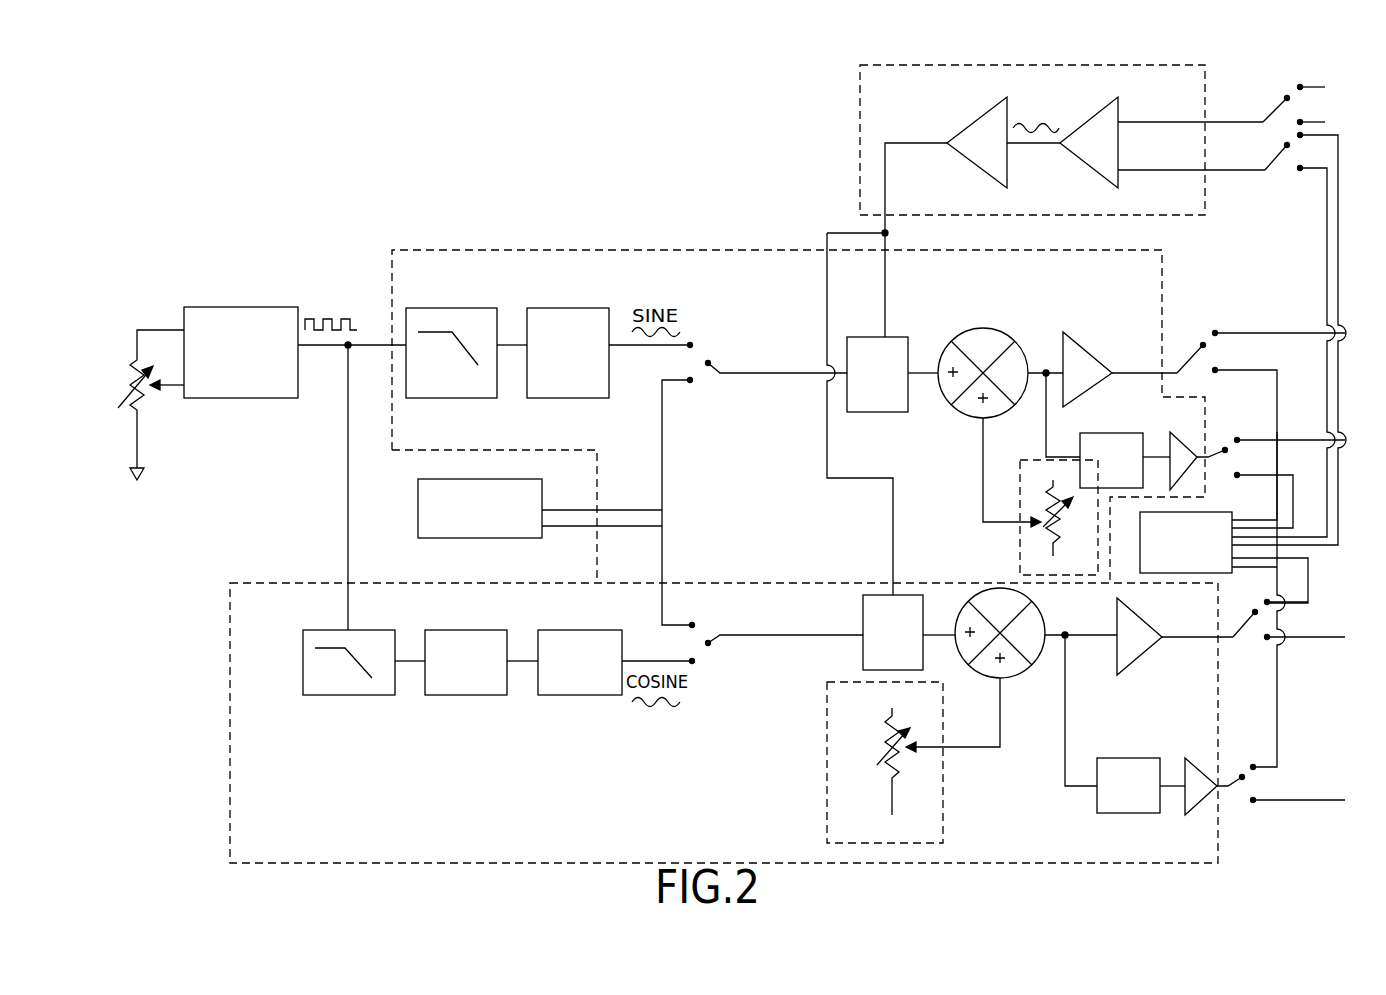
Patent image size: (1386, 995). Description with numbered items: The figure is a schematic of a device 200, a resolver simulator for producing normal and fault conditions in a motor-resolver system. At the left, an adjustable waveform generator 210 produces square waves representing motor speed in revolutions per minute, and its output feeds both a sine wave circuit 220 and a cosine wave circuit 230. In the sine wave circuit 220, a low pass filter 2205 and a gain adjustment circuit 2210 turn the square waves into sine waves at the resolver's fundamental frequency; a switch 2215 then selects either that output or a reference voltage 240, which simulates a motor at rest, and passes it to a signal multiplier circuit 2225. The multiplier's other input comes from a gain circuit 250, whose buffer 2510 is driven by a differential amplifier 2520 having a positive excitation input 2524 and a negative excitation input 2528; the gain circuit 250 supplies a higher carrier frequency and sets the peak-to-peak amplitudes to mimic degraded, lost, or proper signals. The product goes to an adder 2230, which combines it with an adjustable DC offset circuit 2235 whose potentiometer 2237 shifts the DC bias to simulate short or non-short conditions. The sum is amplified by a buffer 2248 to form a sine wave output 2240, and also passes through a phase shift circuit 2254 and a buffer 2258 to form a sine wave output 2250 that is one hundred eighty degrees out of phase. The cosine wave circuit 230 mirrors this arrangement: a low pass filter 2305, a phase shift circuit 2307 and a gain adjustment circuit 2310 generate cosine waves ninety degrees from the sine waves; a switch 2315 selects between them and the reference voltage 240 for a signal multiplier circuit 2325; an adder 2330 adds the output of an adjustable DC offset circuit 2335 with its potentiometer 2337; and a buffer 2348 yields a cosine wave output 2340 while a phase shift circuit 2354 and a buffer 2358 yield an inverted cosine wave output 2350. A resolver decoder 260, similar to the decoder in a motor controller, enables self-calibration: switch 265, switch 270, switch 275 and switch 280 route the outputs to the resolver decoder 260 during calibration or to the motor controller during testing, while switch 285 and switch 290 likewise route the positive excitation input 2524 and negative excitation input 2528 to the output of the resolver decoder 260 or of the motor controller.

The device 200 is at (150, 113).
The adjustable waveform generator 210 is at (222, 307).
The sine wave circuit 220 is at (470, 250).
The low pass filter 2205 is at (440, 308).
The gain adjustment circuit 2210 is at (555, 308).
The switch 2215 is at (715, 360).
The signal multiplier circuit 2225 is at (900, 337).
The adder 2230 is at (983, 328).
The adjustable DC offset circuit 2235 is at (1020, 545).
The potentiometer 2237 is at (1045, 505).
The sine wave output 2240 is at (1148, 370).
The buffer 2248 is at (1085, 345).
The sine wave output 2250 is at (1200, 452).
The phase shift circuit 2254 is at (1110, 433).
The buffer 2258 is at (1160, 453).
The cosine wave circuit 230 is at (272, 583).
The low pass filter 2305 is at (345, 695).
The phase shift circuit 2307 is at (453, 695).
The gain adjustment circuit 2310 is at (562, 695).
The switch 2315 is at (710, 648).
The signal multiplier circuit 2325 is at (863, 650).
The adder 2330 is at (1016, 678).
The adjustable DC offset circuit 2335 is at (827, 773).
The potentiometer 2337 is at (880, 758).
The cosine wave output 2340 is at (1182, 640).
The buffer 2348 is at (1145, 620).
The cosine wave output 2350 is at (1212, 795).
The phase shift circuit 2354 is at (1115, 813).
The buffer 2358 is at (1188, 768).
The reference voltage 240 is at (418, 510).
The gain circuit 250 is at (860, 92).
The buffer 2510 is at (982, 115).
The differential amplifier 2520 is at (1096, 115).
The positive excitation input 2524 is at (1185, 122).
The negative excitation input 2528 is at (1160, 170).
The resolver decoder 260 is at (1140, 573).
The switch 265 is at (1200, 345).
The switch 270 is at (1235, 440).
The switch 275 is at (1240, 630).
The switch 280 is at (1250, 766).
The switch 285 is at (1283, 98).
The switch 290 is at (1277, 162).